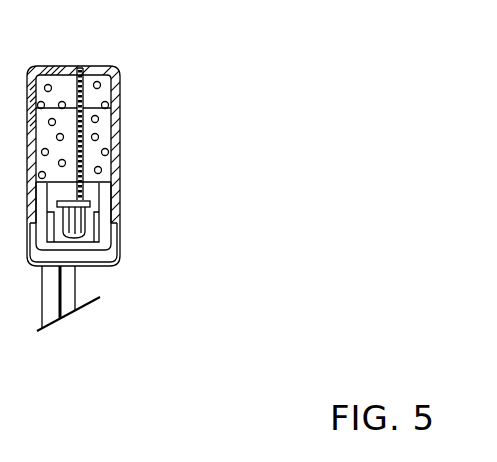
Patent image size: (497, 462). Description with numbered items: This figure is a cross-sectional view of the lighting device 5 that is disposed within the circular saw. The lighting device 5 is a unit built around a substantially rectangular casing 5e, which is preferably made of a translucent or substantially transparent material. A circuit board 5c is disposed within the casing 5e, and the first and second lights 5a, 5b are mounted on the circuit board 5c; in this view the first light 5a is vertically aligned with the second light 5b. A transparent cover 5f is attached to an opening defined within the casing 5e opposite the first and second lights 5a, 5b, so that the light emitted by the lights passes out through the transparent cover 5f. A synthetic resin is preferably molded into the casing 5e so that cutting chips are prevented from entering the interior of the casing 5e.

The lighting device 5 is at (123, 165).
The first light 5a is at (141, 222).
The second light 5b is at (100, 238).
The circuit board 5c is at (80, 68).
The casing 5e is at (121, 147).
The transparent cover 5f is at (113, 265).